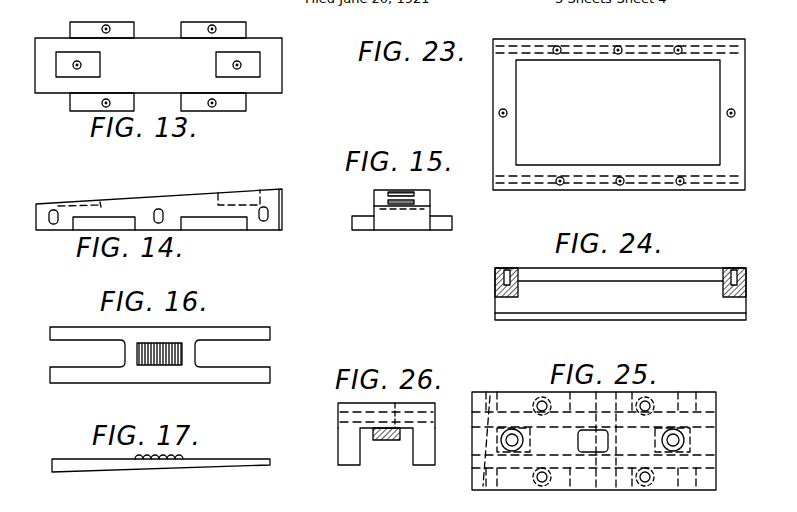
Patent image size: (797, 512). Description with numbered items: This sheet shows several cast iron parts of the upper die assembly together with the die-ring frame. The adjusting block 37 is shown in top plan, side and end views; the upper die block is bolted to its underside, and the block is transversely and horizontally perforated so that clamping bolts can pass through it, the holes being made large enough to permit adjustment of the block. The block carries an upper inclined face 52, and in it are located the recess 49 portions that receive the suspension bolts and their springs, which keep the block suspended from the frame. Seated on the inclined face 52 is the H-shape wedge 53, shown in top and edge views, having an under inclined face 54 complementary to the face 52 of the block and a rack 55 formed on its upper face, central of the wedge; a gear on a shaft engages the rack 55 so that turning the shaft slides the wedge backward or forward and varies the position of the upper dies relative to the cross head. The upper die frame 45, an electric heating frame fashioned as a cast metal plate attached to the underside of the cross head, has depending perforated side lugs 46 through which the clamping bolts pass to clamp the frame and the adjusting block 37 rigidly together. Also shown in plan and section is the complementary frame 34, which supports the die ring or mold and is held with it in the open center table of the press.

In FIG. 23, the complementary frame 34 is at (619, 114).
In FIG. 24, the complementary frame 34 is at (620, 294).
In FIG. 13, the adjusting block 37 is at (275, 84).
In FIG. 14, the adjusting block 37 is at (272, 225).
In FIG. 15, the adjusting block 37 is at (417, 233).
In FIG. 25, the upper die frame 45 is at (717, 448).
In FIG. 26, the upper die frame 45 is at (340, 408).
In FIG. 26, the side lugs 46 is at (353, 462).
In FIG. 13, the recess 49 is at (255, 65).
In FIG. 14, the recess 49 is at (88, 198).
In FIG. 15, the recess 49 is at (432, 197).
In FIG. 13, the upper inclined face 52 is at (158, 65).
In FIG. 14, the upper inclined face 52 is at (172, 183).
In FIG. 15, the upper inclined face 52 is at (376, 197).
In FIG. 16, the H-shape wedge 53 is at (250, 315).
In FIG. 17, the under inclined face 54 is at (216, 469).
In FIG. 16, the rack 55 is at (148, 358).
In FIG. 17, the rack 55 is at (182, 457).